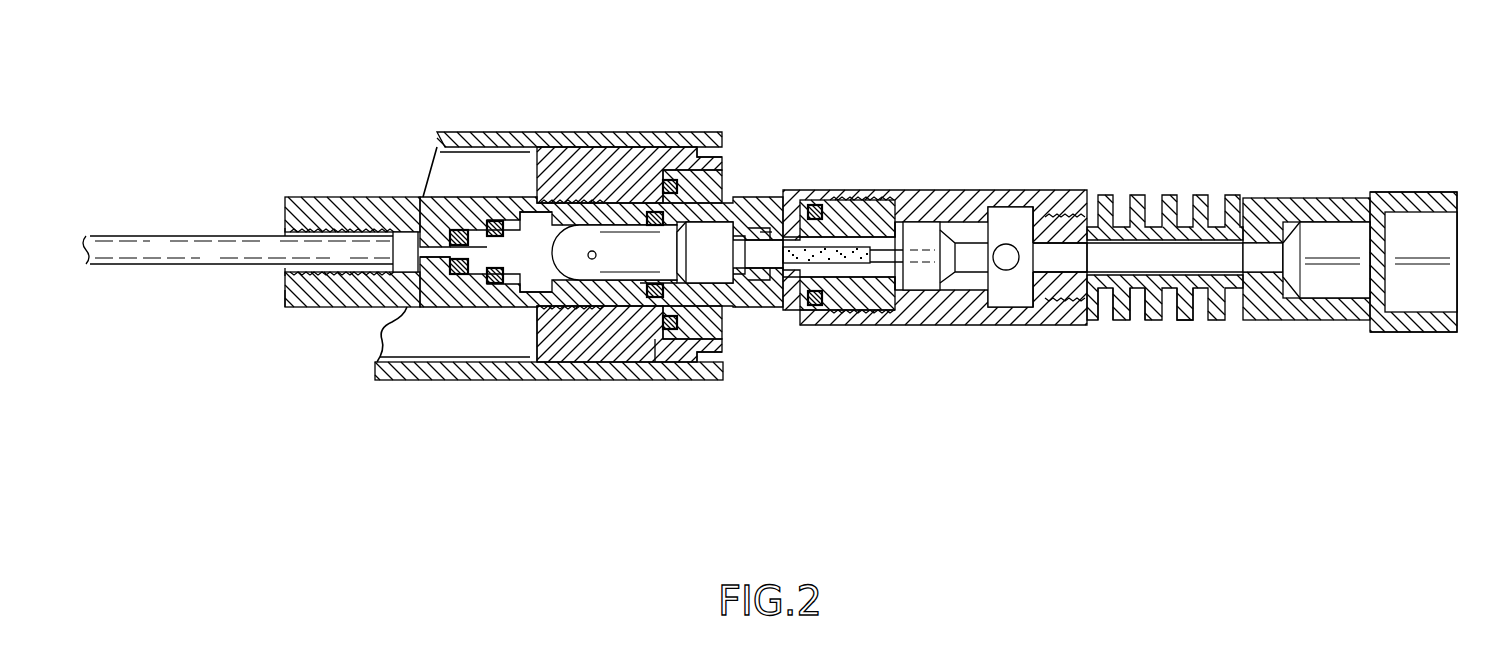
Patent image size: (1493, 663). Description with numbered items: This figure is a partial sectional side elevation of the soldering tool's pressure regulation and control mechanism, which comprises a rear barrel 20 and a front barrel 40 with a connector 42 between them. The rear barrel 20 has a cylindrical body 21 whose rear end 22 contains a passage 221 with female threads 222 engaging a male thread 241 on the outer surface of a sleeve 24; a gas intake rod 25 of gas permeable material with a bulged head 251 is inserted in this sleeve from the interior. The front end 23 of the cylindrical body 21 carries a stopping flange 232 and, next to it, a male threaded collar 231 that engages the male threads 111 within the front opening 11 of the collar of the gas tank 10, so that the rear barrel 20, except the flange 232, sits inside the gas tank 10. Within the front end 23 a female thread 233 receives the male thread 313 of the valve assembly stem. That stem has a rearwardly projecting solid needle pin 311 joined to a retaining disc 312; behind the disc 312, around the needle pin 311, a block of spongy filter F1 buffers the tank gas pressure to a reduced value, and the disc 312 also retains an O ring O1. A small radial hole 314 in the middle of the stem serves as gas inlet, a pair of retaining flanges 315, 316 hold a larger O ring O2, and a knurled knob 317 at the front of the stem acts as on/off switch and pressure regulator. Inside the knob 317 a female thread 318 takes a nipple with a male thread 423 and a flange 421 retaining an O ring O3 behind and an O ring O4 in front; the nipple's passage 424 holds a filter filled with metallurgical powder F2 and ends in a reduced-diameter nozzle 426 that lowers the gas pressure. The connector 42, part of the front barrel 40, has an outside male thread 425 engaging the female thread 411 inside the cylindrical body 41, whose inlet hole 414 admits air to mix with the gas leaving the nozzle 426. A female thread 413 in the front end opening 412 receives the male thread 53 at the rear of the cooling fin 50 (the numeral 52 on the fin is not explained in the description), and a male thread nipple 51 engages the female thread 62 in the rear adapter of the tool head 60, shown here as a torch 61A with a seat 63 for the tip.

The gas tank 10 is at (425, 380).
The front opening 11 is at (657, 365).
The male threads 111 is at (648, 300).
The rear barrel 20 is at (400, 316).
The cylindrical body 21 is at (320, 292).
The rear end 22 is at (308, 197).
The passage 221 is at (290, 300).
The female threads 222 is at (285, 232).
The front end 23 is at (572, 150).
The male threaded collar 231 is at (661, 300).
The stopping flange 232 is at (718, 155).
The female thread 233 is at (552, 305).
The sleeve 24 is at (353, 232).
The male thread 241 is at (285, 264).
The gas intake rod 25 is at (95, 236).
The bulged head 251 is at (403, 240).
The solid needle pin 311 is at (447, 230).
The retaining disc 312 is at (478, 262).
The male thread 313 is at (535, 280).
The small hole 314 is at (593, 262).
The retaining flange 315 is at (700, 222).
The retaining flange 316 is at (705, 185).
The knurled knob 317 is at (740, 232).
The female thread 318 is at (770, 290).
The front barrel 40 is at (978, 326).
The cylindrical body 41 is at (950, 310).
The female thread 411 is at (830, 312).
The front end opening 412 is at (1038, 212).
The female thread 413 is at (1072, 320).
The inlet hole 414 is at (1008, 266).
The connector 42 is at (868, 205).
The flange 421 is at (790, 292).
The male thread 423 is at (757, 285).
The passage 424 is at (778, 236).
The male thread 425 is at (898, 295).
The nozzle 426 is at (912, 286).
The cooling fin 50 is at (1163, 192).
The male thread nipple 51 is at (1262, 322).
The spring fin 52 is at (1172, 322).
The male thread 53 is at (1093, 322).
The tool head 60 is at (1356, 332).
The torch 61A is at (1330, 195).
The female thread 62 is at (1263, 222).
The seat 63 is at (1447, 212).
The spongy filter F1 is at (470, 238).
The metallurgical powder F2 is at (905, 222).
The O ring O1 is at (497, 228).
The O ring O2 is at (668, 182).
The O ring O3 is at (775, 240).
The O ring O4 is at (818, 208).